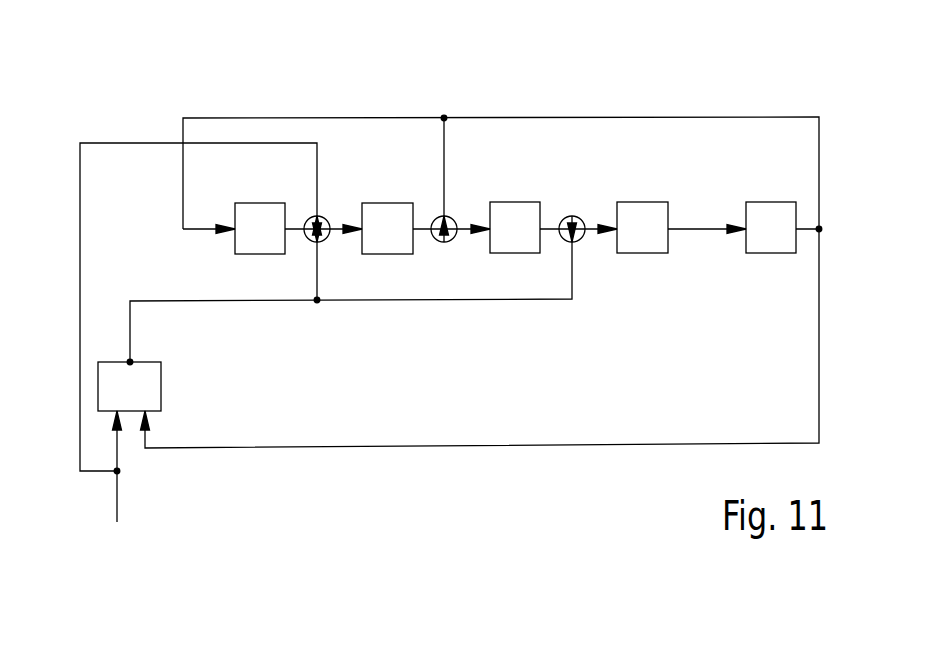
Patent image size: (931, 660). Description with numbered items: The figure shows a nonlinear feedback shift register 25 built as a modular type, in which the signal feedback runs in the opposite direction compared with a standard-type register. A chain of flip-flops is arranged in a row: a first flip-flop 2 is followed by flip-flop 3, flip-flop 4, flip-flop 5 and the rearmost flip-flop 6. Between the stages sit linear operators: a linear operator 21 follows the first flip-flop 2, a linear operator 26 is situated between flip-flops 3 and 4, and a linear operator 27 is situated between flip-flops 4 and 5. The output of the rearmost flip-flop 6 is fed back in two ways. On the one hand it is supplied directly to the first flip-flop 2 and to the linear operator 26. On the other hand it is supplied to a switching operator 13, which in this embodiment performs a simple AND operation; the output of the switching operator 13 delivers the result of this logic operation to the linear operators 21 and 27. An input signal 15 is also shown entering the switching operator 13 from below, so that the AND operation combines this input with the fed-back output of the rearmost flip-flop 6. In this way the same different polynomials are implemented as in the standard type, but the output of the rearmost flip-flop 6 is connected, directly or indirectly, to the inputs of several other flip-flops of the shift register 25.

The first flip-flop 2 is at (259, 203).
The flip-flop 3 is at (387, 203).
The flip-flop 4 is at (515, 202).
The flip-flop 5 is at (642, 202).
The rearmost flip-flop 6 is at (772, 202).
The switching operator 13 is at (162, 387).
The input signal 15 is at (116, 500).
The linear operator 21 is at (326, 238).
The nonlinear feedback shift register 25 is at (167, 88).
The linear operator 26 is at (453, 238).
The linear operator 27 is at (581, 238).